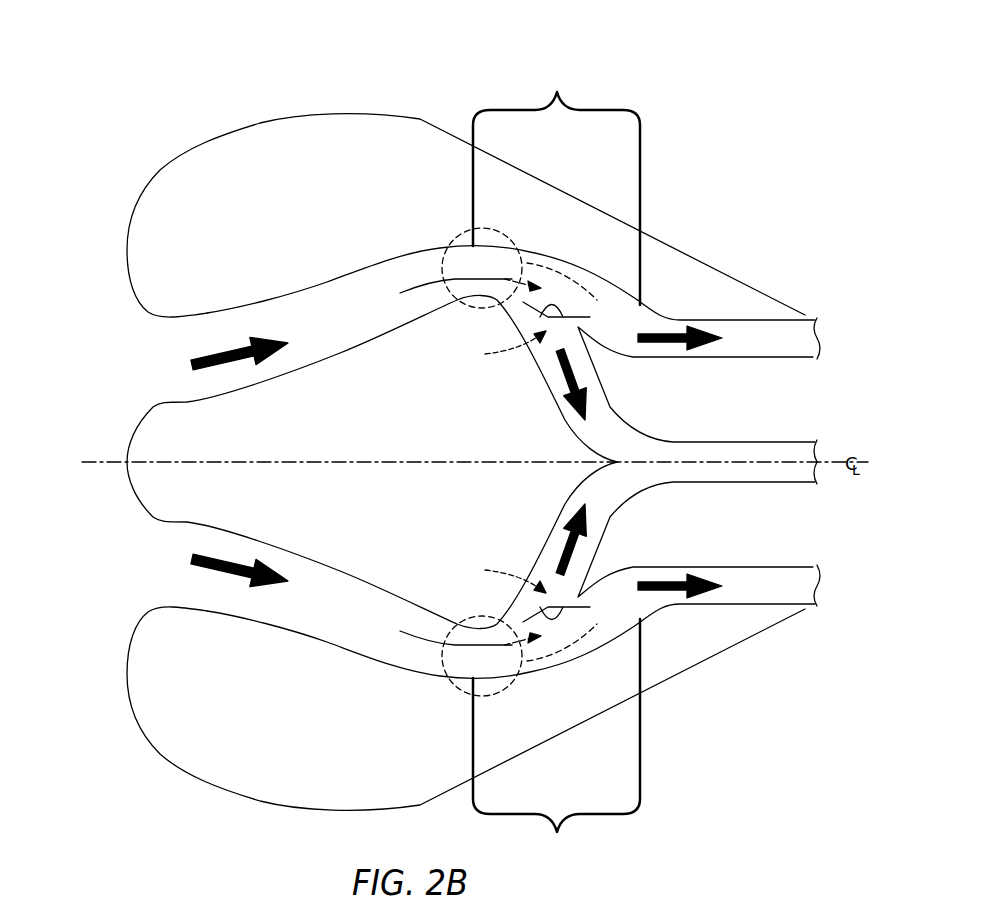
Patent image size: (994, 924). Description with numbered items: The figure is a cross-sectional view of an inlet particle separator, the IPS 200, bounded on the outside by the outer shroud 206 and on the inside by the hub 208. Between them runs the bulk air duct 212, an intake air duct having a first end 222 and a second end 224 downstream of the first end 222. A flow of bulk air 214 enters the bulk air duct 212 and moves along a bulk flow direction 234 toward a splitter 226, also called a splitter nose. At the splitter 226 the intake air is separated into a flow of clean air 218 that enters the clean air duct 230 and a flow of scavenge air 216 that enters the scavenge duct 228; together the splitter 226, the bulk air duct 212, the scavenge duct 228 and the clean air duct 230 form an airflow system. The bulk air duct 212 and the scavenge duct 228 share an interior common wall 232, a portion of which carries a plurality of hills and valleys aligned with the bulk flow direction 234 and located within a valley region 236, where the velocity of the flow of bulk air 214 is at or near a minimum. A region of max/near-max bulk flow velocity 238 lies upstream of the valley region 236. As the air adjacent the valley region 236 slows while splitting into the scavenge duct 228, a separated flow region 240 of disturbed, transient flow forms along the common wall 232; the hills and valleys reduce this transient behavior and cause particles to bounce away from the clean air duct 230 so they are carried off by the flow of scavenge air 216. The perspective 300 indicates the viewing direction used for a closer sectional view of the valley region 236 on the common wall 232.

The IPS 200 is at (145, 106).
The outer shroud 206 is at (260, 122).
The hub 208 is at (127, 444).
The bulk air duct 212 is at (339, 342).
The flow of bulk air 214 is at (220, 357).
The flow of scavenge air 216 is at (665, 330).
The flow of clean air 218 is at (557, 383).
The first end 222 is at (148, 362).
The second end 224 is at (496, 462).
The splitter 226 is at (590, 340).
The scavenge duct 228 is at (629, 334).
The clean air duct 230 is at (553, 367).
The common wall 232 is at (327, 282).
The bulk flow direction 234 is at (420, 288).
The valley region 236 is at (556, 462).
The region of max/near-max bulk flow velocity 238 is at (483, 229).
The separated flow region 240 is at (547, 267).
The perspective 300 is at (573, 310).